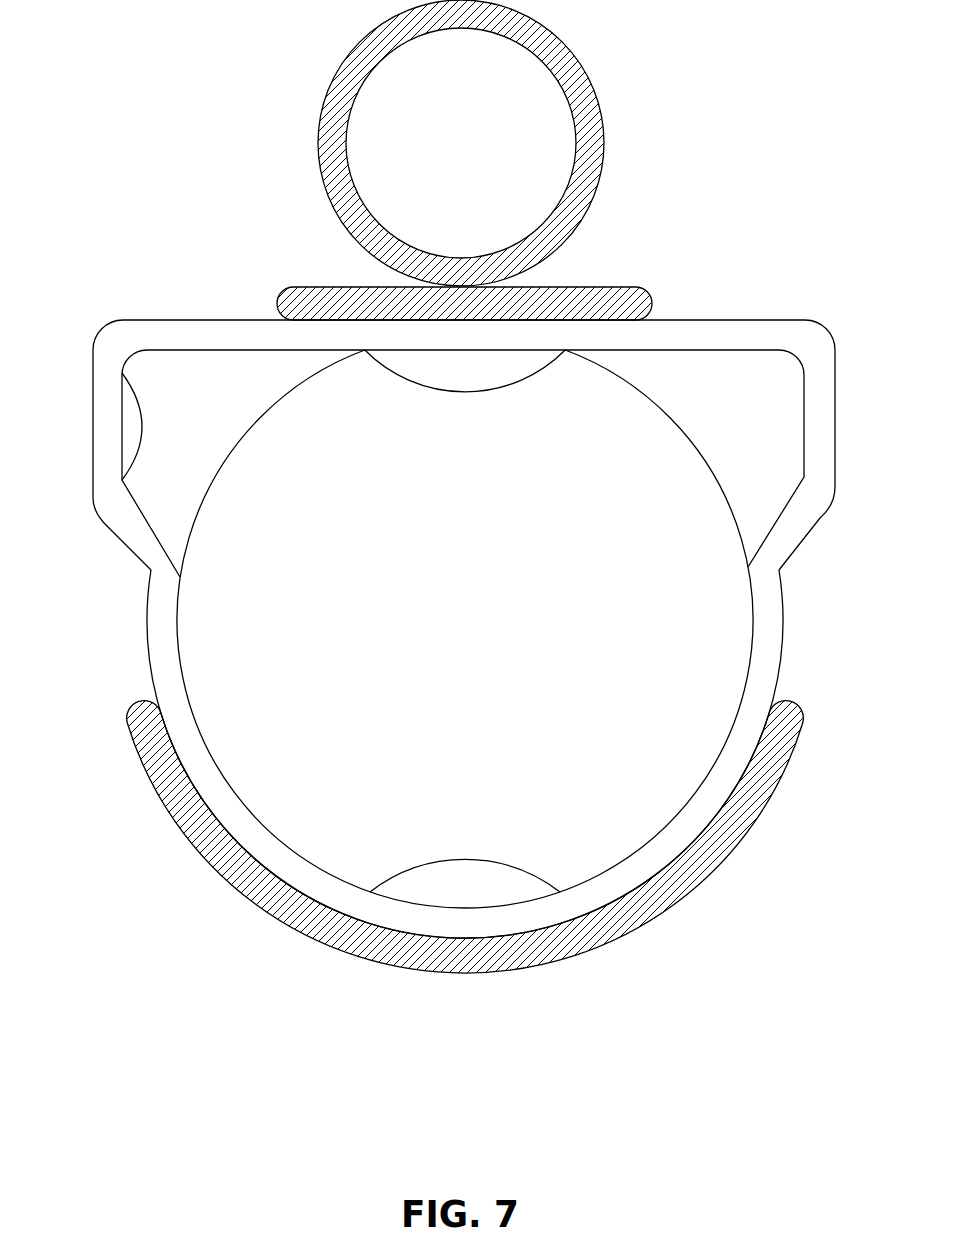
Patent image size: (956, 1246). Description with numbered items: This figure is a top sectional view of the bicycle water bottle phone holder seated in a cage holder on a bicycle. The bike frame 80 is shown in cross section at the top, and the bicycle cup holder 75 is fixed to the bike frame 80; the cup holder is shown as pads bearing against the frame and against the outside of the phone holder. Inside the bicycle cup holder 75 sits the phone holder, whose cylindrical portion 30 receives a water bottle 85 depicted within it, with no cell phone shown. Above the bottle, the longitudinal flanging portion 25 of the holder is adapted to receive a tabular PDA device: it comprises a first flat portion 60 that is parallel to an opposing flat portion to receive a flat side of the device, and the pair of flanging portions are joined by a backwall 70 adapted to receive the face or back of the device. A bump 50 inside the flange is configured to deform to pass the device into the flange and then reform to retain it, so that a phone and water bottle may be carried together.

The bike frame 80 is at (461, 143).
The water bottle 85 is at (465, 629).
The bicycle cup holder 75 is at (281, 290).
The backwall 70 is at (716, 318).
The first flat portion 60 is at (102, 410).
The cylindrical portion 30 is at (150, 648).
The longitudinal flanging portion 25 is at (147, 352).
The bump 50 is at (142, 430).